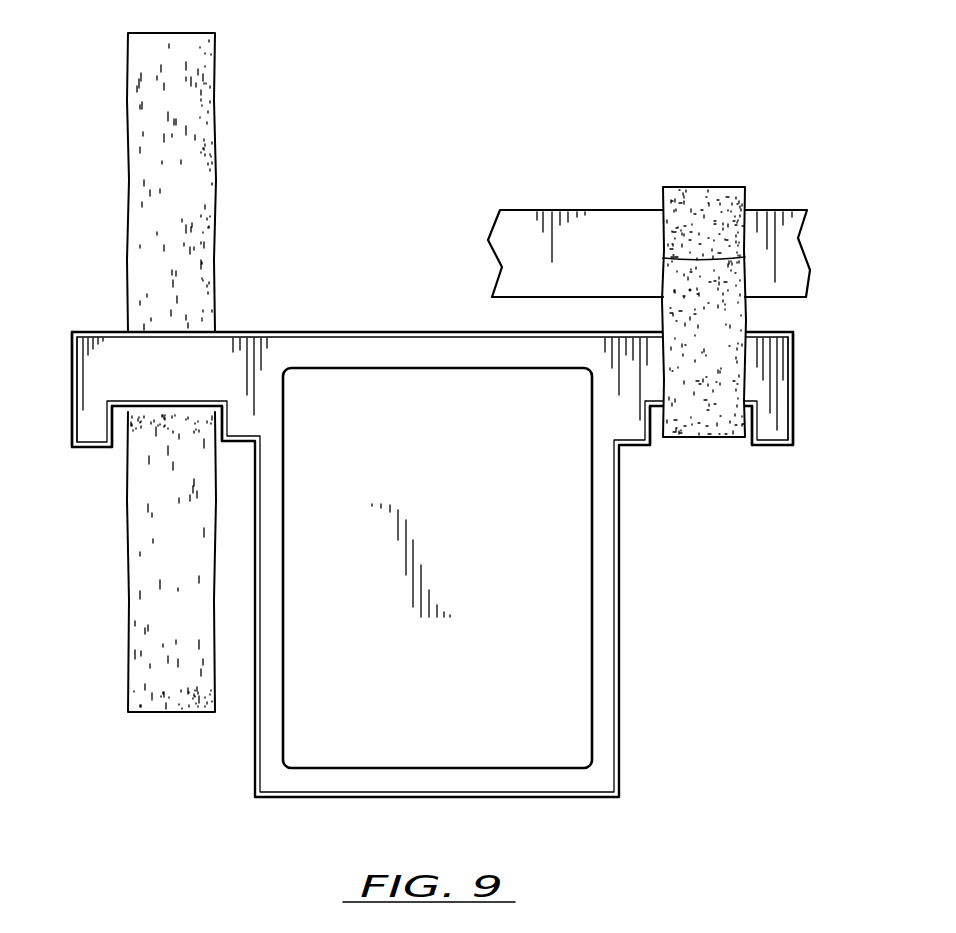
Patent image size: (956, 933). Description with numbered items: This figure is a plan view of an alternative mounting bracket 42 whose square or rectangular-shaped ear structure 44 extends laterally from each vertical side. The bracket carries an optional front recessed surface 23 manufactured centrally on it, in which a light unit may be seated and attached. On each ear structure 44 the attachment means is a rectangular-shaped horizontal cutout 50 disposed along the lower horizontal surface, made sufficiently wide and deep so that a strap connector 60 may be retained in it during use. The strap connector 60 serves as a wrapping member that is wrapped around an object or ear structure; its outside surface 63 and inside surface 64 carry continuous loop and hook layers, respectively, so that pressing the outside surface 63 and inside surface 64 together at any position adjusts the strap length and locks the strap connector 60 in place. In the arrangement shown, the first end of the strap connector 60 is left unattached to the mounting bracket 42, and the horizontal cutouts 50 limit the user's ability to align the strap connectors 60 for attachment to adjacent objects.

The front recessed surface 23 is at (440, 690).
The mounting bracket 42 is at (421, 330).
The ear structure 44 is at (72, 357).
The horizontal cutout 50 is at (122, 450).
The strap connector 60 is at (218, 122).
The outside surface 63 is at (747, 316).
The inside surface 64 is at (197, 264).